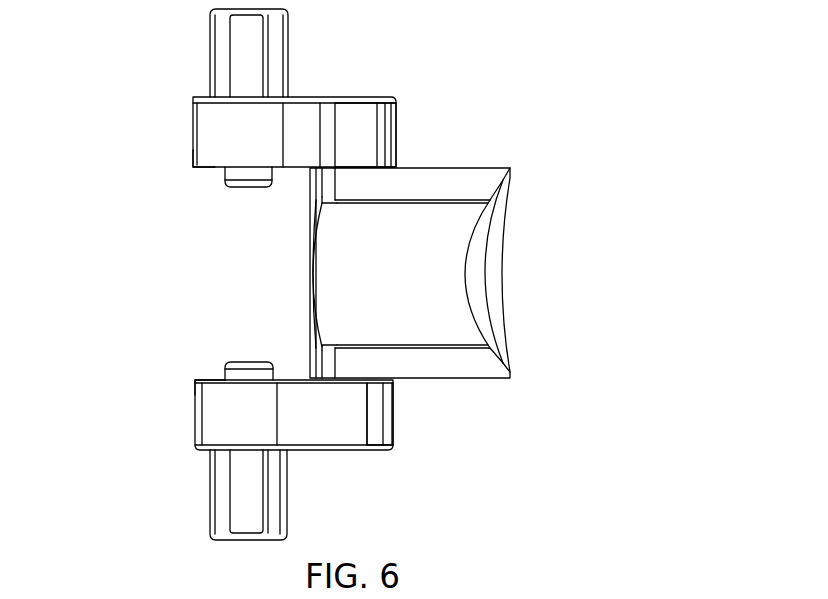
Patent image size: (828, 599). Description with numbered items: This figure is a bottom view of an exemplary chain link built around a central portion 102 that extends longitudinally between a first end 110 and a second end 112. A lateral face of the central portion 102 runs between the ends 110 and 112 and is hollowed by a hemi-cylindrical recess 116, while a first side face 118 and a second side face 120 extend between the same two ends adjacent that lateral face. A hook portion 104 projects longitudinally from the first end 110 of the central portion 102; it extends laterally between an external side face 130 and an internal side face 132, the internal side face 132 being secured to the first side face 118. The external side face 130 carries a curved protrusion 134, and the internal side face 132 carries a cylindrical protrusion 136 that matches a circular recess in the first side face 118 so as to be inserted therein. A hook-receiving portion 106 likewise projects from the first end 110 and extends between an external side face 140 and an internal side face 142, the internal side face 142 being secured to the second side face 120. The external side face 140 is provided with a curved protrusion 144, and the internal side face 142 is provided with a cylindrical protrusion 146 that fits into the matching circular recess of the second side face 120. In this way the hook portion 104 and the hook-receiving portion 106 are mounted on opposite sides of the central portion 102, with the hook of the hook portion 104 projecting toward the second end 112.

The central portion 102 is at (430, 172).
The hook portion 104 is at (218, 410).
The hook-receiving portion 106 is at (217, 127).
The first end 110 is at (307, 330).
The second end 112 is at (508, 280).
The hemi-cylindrical recess 116 is at (432, 292).
The first side face 118 is at (470, 162).
The second side face 120 is at (443, 378).
The external side face 130 is at (370, 455).
The internal side face 132 is at (208, 380).
The curved protrusion 134 is at (218, 508).
The cylindrical protrusion 136 is at (243, 375).
The external side face 140 is at (358, 95).
The internal side face 142 is at (200, 170).
The curved protrusion 144 is at (232, 44).
The cylindrical protrusion 146 is at (245, 172).